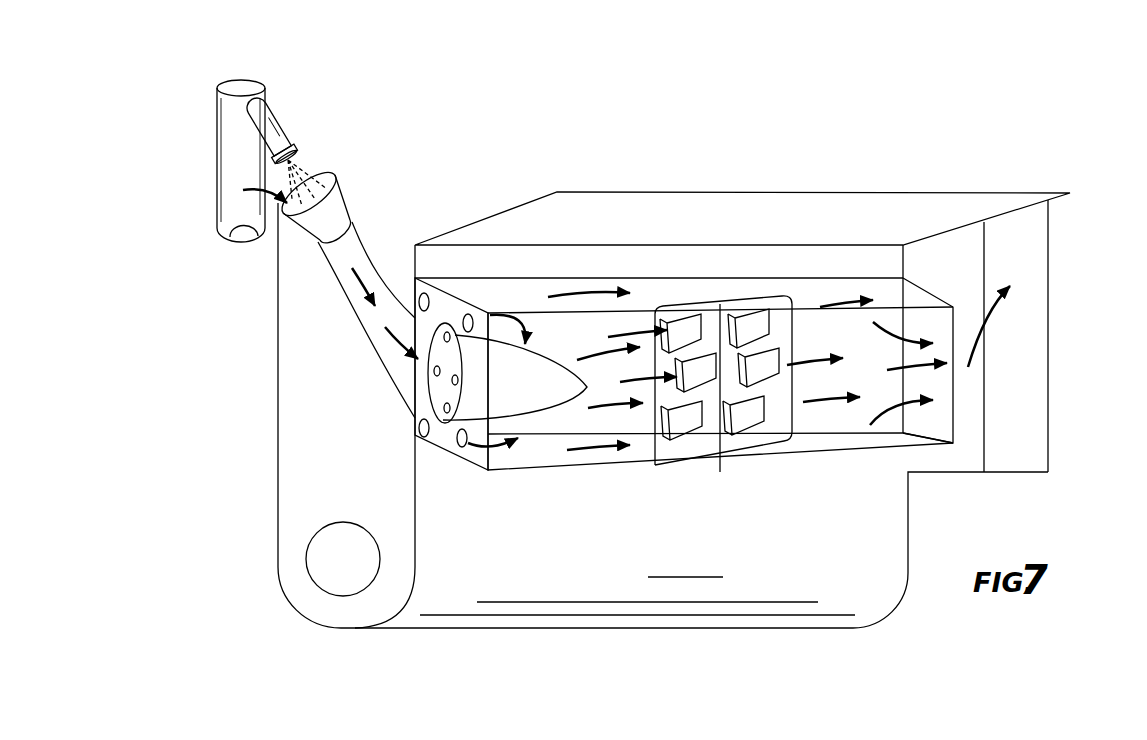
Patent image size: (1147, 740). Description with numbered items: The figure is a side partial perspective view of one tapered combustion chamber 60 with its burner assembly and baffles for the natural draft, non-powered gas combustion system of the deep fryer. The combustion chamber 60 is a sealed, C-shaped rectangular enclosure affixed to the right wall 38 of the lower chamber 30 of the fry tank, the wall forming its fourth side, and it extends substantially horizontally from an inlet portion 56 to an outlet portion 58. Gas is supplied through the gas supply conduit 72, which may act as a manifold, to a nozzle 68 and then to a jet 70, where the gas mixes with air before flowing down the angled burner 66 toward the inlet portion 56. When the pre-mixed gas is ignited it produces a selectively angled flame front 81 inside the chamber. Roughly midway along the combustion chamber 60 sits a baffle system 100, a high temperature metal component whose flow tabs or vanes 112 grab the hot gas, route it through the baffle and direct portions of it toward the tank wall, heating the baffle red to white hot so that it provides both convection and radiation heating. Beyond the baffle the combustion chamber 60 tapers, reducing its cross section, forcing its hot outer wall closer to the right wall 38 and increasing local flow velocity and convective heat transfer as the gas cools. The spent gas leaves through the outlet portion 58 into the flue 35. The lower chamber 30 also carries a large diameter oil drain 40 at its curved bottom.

The lower chamber 30 is at (295, 428).
The flue 35 is at (1048, 368).
The right wall 38 is at (622, 256).
The oil drain 40 is at (307, 556).
The inlet portion 56 is at (477, 464).
The outlet portion 58 is at (956, 440).
The combustion chamber 60 is at (943, 327).
The angled burner 66 is at (360, 332).
The nozzle 68 is at (278, 122).
The jet 70 is at (338, 190).
The gas supply conduit 72 is at (215, 186).
The flame front 81 is at (516, 398).
The baffle system 100 is at (783, 314).
The vanes 112 is at (753, 415).